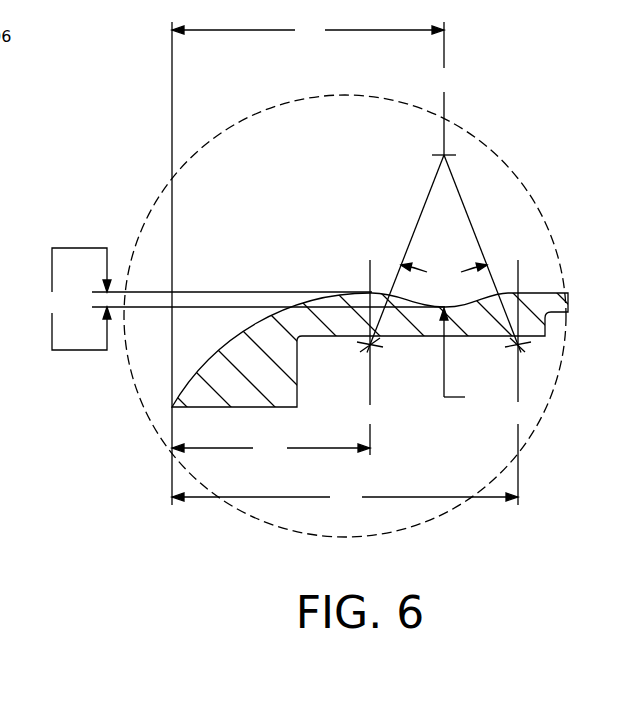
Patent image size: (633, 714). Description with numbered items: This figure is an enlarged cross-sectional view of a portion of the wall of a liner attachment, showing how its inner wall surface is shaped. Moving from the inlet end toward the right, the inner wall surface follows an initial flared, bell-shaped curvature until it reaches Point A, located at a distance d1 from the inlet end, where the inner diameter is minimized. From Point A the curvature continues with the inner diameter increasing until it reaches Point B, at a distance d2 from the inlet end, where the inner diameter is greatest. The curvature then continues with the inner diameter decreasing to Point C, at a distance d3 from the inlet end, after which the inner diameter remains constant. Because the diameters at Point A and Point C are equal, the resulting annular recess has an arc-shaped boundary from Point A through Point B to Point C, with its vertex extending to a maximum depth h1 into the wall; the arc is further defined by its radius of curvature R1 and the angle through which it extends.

The distance d1 is at (271, 451).
The distance d2 is at (308, 33).
The distance d3 is at (345, 500).
The maximum depth h1 is at (242, 299).
The radius of curvature R1 is at (465, 360).
The Point A is at (370, 357).
The Point B is at (444, 88).
The Point C is at (518, 382).